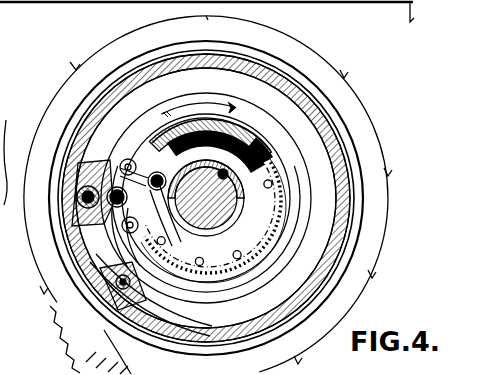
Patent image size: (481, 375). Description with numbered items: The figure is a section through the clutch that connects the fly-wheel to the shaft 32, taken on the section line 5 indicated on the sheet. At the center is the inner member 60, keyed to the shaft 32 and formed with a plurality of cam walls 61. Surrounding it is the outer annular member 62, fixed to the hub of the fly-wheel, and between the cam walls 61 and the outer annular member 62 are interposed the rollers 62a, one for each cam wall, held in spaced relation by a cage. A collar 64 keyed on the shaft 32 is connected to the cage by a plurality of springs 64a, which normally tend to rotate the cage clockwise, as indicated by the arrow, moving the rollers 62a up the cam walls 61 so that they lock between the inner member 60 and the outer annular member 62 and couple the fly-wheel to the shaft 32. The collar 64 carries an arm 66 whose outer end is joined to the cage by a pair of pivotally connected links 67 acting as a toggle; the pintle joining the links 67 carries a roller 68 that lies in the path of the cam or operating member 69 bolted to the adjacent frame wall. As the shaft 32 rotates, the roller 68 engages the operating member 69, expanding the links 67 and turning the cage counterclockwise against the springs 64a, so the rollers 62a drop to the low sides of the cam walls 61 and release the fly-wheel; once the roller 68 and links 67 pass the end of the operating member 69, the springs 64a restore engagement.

The section line 5- 5 is at (206, 175).
The shaft 32 is at (206, 202).
The inner member 60 is at (264, 124).
The cam walls 61 is at (241, 122).
The outer annular member 62 is at (176, 118).
The rollers 62a is at (262, 148).
The collar 64 is at (268, 204).
The springs 64a is at (236, 312).
The arm 66 is at (144, 218).
The links 67 is at (128, 159).
The roller 68 is at (72, 228).
The operating member 69 is at (150, 308).